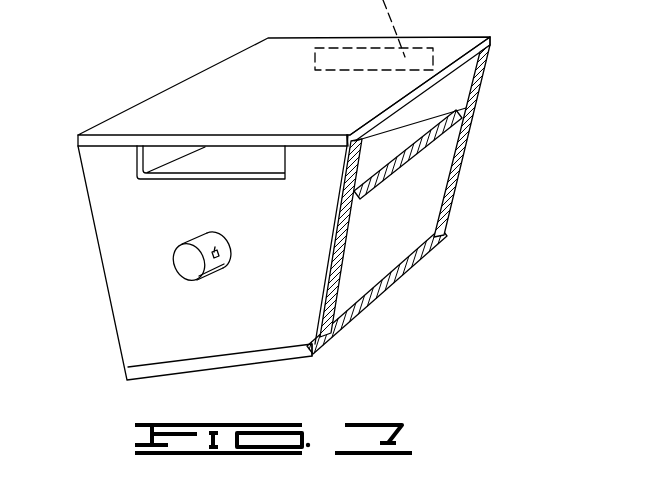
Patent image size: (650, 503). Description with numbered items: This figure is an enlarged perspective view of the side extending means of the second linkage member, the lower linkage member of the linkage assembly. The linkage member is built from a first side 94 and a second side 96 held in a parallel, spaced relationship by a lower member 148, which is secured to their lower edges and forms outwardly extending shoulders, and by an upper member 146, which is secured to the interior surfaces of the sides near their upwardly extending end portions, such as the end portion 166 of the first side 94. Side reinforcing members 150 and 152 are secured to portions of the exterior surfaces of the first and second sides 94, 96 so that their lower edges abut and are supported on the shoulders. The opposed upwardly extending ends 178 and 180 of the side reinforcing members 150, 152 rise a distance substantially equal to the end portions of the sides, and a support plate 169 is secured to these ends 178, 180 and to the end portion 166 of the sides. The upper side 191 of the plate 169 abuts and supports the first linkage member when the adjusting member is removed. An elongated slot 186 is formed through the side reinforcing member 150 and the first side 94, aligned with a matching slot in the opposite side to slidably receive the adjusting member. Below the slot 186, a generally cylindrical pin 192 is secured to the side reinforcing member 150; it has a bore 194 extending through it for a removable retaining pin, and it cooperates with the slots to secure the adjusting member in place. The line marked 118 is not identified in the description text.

The support plate 169 is at (157, 120).
The upper side of the plate 191 is at (260, 65).
The upwardly extending end of side reinforcing member 178 is at (97, 165).
The elongated slot 186 is at (217, 160).
The side reinforcing member 150 is at (232, 261).
The pin 192 is at (217, 240).
The bore 194 is at (230, 253).
The upwardly extending end portion of the first side 166 is at (360, 170).
The upwardly extending end of side reinforcing member 180 is at (491, 40).
The side reinforcing member 152 is at (479, 92).
The upper frame edge 118 is at (473, 87).
The upper member 146 is at (440, 137).
The second side 96 is at (430, 168).
The first side 94 is at (345, 213).
The lower member 148 is at (378, 292).